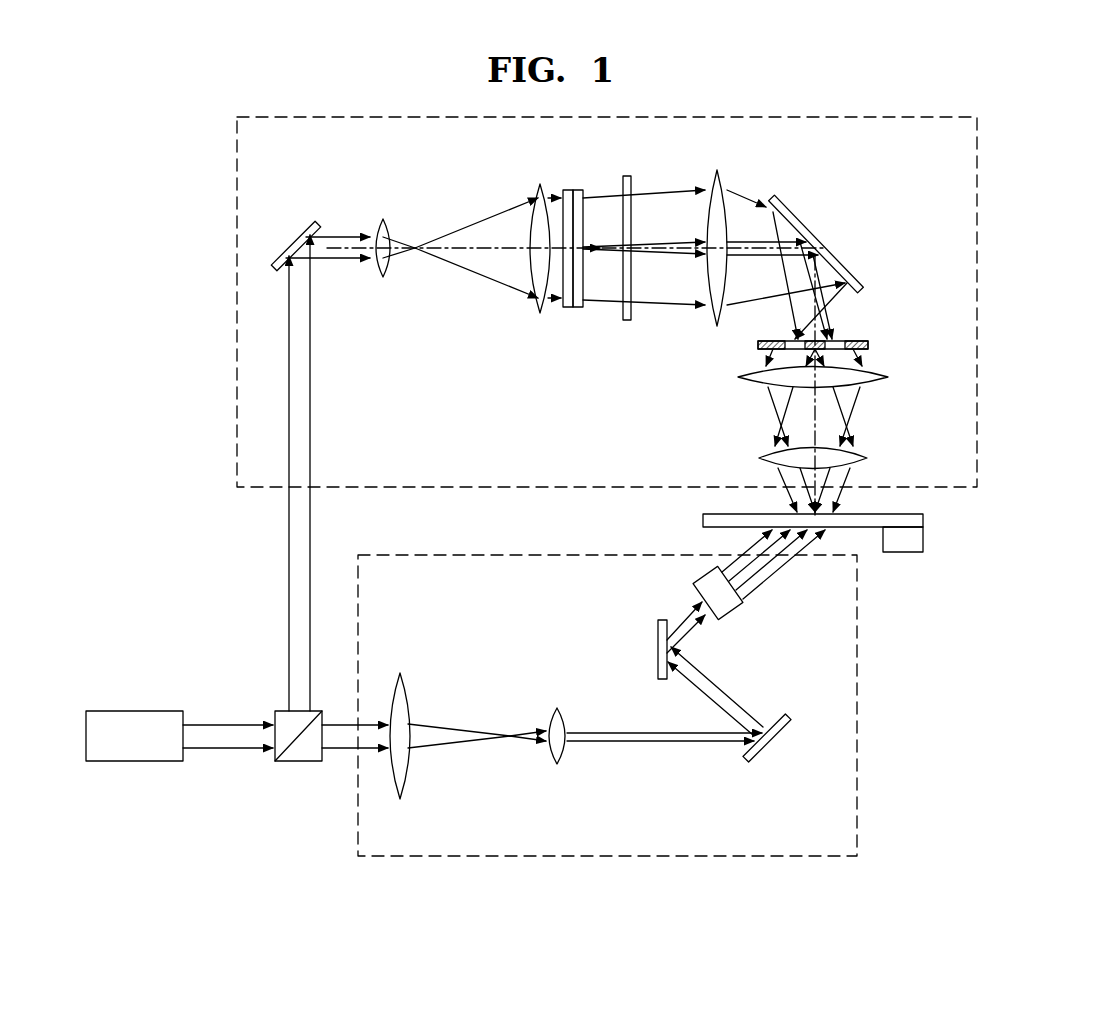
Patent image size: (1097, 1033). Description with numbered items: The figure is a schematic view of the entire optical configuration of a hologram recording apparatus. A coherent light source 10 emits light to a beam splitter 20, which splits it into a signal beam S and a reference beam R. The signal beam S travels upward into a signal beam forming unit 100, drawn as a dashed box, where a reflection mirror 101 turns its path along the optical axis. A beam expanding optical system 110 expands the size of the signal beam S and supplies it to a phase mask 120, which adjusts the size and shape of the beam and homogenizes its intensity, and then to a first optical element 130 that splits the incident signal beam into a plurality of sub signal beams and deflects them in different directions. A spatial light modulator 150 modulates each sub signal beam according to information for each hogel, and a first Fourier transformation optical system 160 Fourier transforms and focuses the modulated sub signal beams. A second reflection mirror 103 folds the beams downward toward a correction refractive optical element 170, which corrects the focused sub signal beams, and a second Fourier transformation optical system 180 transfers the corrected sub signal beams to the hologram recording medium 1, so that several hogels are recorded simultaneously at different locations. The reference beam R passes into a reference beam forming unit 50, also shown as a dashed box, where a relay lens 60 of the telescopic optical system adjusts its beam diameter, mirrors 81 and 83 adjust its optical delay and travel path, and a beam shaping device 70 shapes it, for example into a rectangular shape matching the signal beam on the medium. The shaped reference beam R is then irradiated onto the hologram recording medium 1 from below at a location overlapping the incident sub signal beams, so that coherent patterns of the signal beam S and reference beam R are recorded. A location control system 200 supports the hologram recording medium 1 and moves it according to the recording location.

The hologram recording medium 1 is at (920, 519).
The coherent light source 10 is at (135, 711).
The beam splitter 20 is at (300, 762).
The reference beam forming unit 50 is at (857, 703).
The relay lens 60 is at (557, 801).
The beam shaping device 70 is at (730, 612).
The mirror 81 is at (760, 760).
The mirror 83 is at (658, 637).
The signal beam forming unit 100 is at (977, 303).
The reflection mirror 101 is at (306, 230).
The reflection mirror 103 is at (846, 272).
The beam expanding optical system 110 is at (540, 320).
The phase mask 120 is at (568, 190).
The first optical element 130 is at (582, 190).
The spatial light modulator 150 is at (627, 320).
The first Fourier transformation optical system 160 is at (721, 185).
The correction refractive optical element 170 is at (870, 345).
The second Fourier transformation optical system 180 is at (900, 373).
The location control system 200 is at (923, 541).
The signal beam S is at (289, 590).
The reference beam R is at (342, 750).